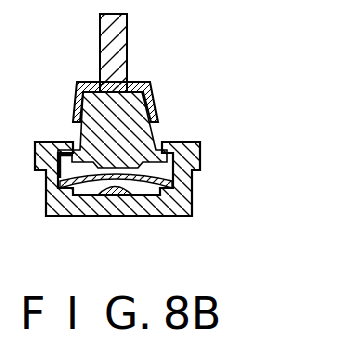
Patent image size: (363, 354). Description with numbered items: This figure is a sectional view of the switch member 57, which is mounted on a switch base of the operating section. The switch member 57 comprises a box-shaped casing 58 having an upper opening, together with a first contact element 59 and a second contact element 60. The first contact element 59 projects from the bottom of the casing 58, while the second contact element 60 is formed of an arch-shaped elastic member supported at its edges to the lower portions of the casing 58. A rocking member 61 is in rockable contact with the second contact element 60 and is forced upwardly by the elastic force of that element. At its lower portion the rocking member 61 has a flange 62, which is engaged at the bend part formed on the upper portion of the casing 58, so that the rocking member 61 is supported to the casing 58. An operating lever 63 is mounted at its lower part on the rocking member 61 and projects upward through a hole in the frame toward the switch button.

The switch member 57 is at (60, 120).
The casing 58 is at (193, 200).
The first contact element 59 is at (114, 193).
The second contact element 60 is at (176, 182).
The rocking member 61 is at (147, 133).
The flange 62 is at (56, 168).
The operating lever 63 is at (123, 31).